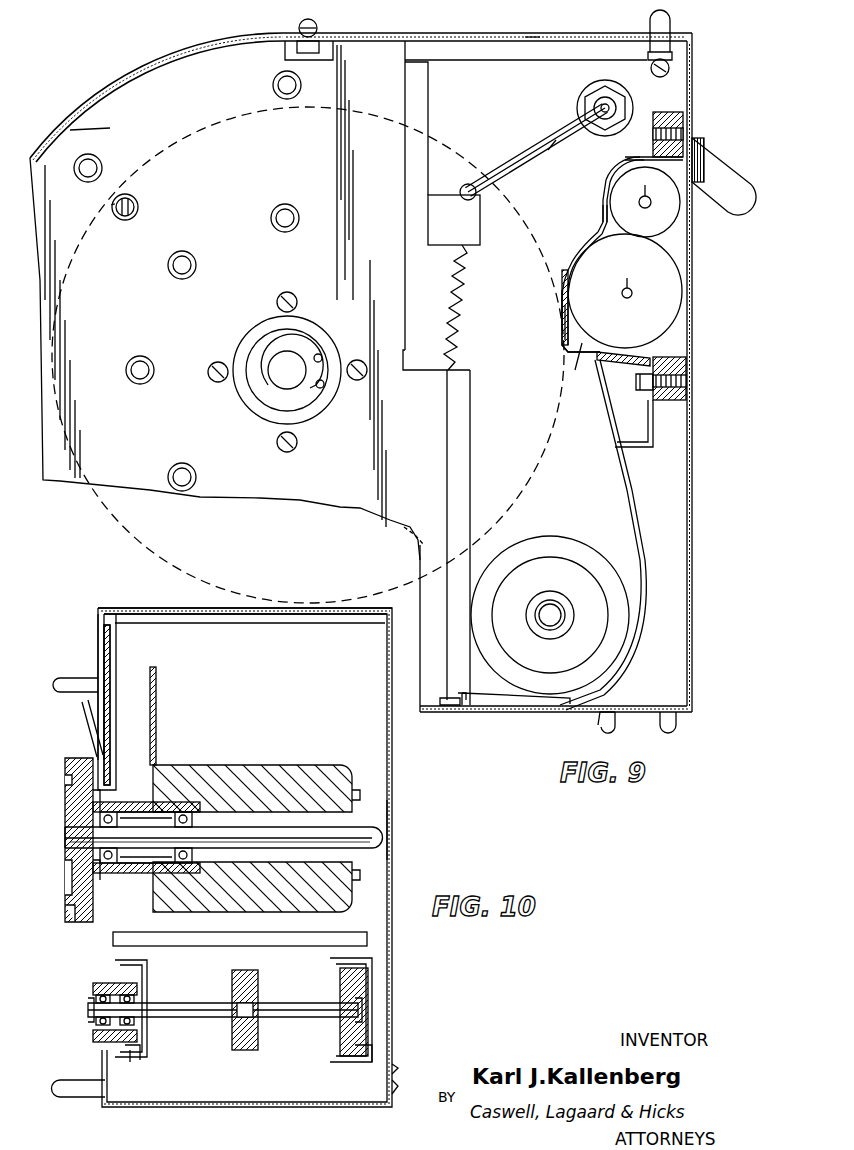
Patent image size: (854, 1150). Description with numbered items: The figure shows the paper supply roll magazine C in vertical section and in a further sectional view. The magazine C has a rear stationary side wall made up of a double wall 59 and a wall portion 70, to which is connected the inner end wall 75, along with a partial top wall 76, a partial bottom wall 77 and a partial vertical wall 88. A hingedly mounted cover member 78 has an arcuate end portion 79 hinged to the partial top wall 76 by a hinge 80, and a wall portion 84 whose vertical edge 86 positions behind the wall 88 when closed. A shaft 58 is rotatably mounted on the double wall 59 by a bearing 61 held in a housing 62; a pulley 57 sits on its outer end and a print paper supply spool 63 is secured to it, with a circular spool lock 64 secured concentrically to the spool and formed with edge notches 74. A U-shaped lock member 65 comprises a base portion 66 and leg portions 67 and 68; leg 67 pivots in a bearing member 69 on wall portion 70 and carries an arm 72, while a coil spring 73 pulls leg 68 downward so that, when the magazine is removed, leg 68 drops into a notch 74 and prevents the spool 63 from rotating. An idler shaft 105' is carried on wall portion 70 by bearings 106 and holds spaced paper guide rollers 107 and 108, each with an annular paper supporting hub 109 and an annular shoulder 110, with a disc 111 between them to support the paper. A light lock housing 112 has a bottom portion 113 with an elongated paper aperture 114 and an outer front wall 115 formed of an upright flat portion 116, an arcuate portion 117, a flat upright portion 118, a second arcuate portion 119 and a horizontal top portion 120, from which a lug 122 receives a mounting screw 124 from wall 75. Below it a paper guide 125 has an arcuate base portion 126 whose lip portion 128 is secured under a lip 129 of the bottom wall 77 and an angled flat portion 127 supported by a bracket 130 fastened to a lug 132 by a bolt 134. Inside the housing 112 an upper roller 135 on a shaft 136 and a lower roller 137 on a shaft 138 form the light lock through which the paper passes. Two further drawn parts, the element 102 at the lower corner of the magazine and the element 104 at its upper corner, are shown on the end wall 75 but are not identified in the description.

In FIG. 10, the pulley 57 is at (68, 912).
In FIG. 9, the shaft 58 is at (292, 368).
In FIG. 10, the shaft 58 is at (72, 840).
In FIG. 9, the double wall 59 is at (250, 373).
In FIG. 10, the double wall 59 is at (118, 700).
In FIG. 10, the bearing 61 is at (185, 810).
In FIG. 9, the housing 62 is at (305, 325).
In FIG. 10, the housing 62 is at (165, 800).
In FIG. 10, the print paper supply spool 63 is at (292, 775).
In FIG. 9, the circular spool lock 64 is at (235, 118).
In FIG. 9, the U-shaped lock member 65 is at (526, 148).
In FIG. 9, the base portion 66 is at (551, 157).
In FIG. 9, the leg portion 67 is at (590, 108).
In FIG. 9, the leg portion 68 is at (472, 182).
In FIG. 9, the bearing member 69 is at (598, 82).
In FIG. 9, the wall portion 70 is at (590, 196).
In FIG. 9, the arm 72 is at (730, 172).
In FIG. 9, the coil spring 73 is at (452, 320).
In FIG. 9, the notches 74 is at (120, 190).
In FIG. 9, the inner end wall 75 is at (690, 486).
In FIG. 10, the inner end wall 75 is at (242, 1108).
In FIG. 9, the partial top wall 76 is at (530, 34).
In FIG. 9, the partial bottom wall 77 is at (645, 718).
In FIG. 10, the partial bottom wall 77 is at (240, 1002).
In FIG. 9, the movable cover member 78 is at (62, 114).
In FIG. 10, the movable cover member 78 is at (352, 606).
In FIG. 9, the arcuate end portion 79 is at (98, 129).
In FIG. 10, the arcuate end portion 79 is at (148, 608).
In FIG. 9, the hinge 80 is at (296, 26).
In FIG. 10, the wall portion 84 is at (392, 798).
In FIG. 10, the vertical edge 86 is at (395, 1088).
In FIG. 10, the partial vertical wall 88 is at (396, 1068).
In FIG. 9, the bolt 102 is at (678, 722).
In FIG. 9, the bolt 104 is at (672, 23).
In FIG. 9, the idler shaft 105' is at (565, 602).
In FIG. 10, the idler shaft 105' is at (225, 1023).
In FIG. 10, the bearings 106 is at (135, 980).
In FIG. 10, the paper guide roller 107 is at (146, 1058).
In FIG. 9, the paper guide roller 108 is at (575, 552).
In FIG. 10, the paper guide roller 108 is at (342, 1058).
In FIG. 10, the annular paper supporting hub 109 is at (152, 960).
In FIG. 10, the annular shoulder 110 is at (132, 1058).
In FIG. 10, the disc 111 is at (262, 992).
In FIG. 9, the light lock housing 112 is at (564, 246).
In FIG. 9, the bottom portion 113 is at (645, 356).
In FIG. 9, the elongated paper aperture 114 is at (575, 372).
In FIG. 9, the outer front wall 115 is at (560, 270).
In FIG. 9, the upright flat portion 116 is at (560, 320).
In FIG. 9, the arcuate portion 117 is at (578, 234).
In FIG. 9, the flat upright portion 118 is at (600, 203).
In FIG. 9, the second arcuate portion 119 is at (620, 162).
In FIG. 9, the horizontal top portion 120 is at (642, 156).
In FIG. 9, the lug 122 is at (668, 118).
In FIG. 9, the mounting screw 124 is at (686, 133).
In FIG. 9, the paper guide 125 is at (644, 526).
In FIG. 9, the arcuate base portion 126 is at (620, 672).
In FIG. 9, the flat portion 127 is at (620, 502).
In FIG. 9, the lip portion 128 is at (456, 712).
In FIG. 9, the lip 129 is at (445, 698).
In FIG. 9, the bracket 130 is at (656, 448).
In FIG. 9, the lug 132 is at (680, 400).
In FIG. 9, the bolt 134 is at (690, 380).
In FIG. 9, the upper roller 135 is at (665, 220).
In FIG. 9, the shaft 136 is at (647, 191).
In FIG. 9, the lower roller 137 is at (625, 291).
In FIG. 9, the shaft 138 is at (625, 280).
In FIG. 9, the magazine C is at (90, 486).
In FIG. 10, the magazine C is at (398, 834).